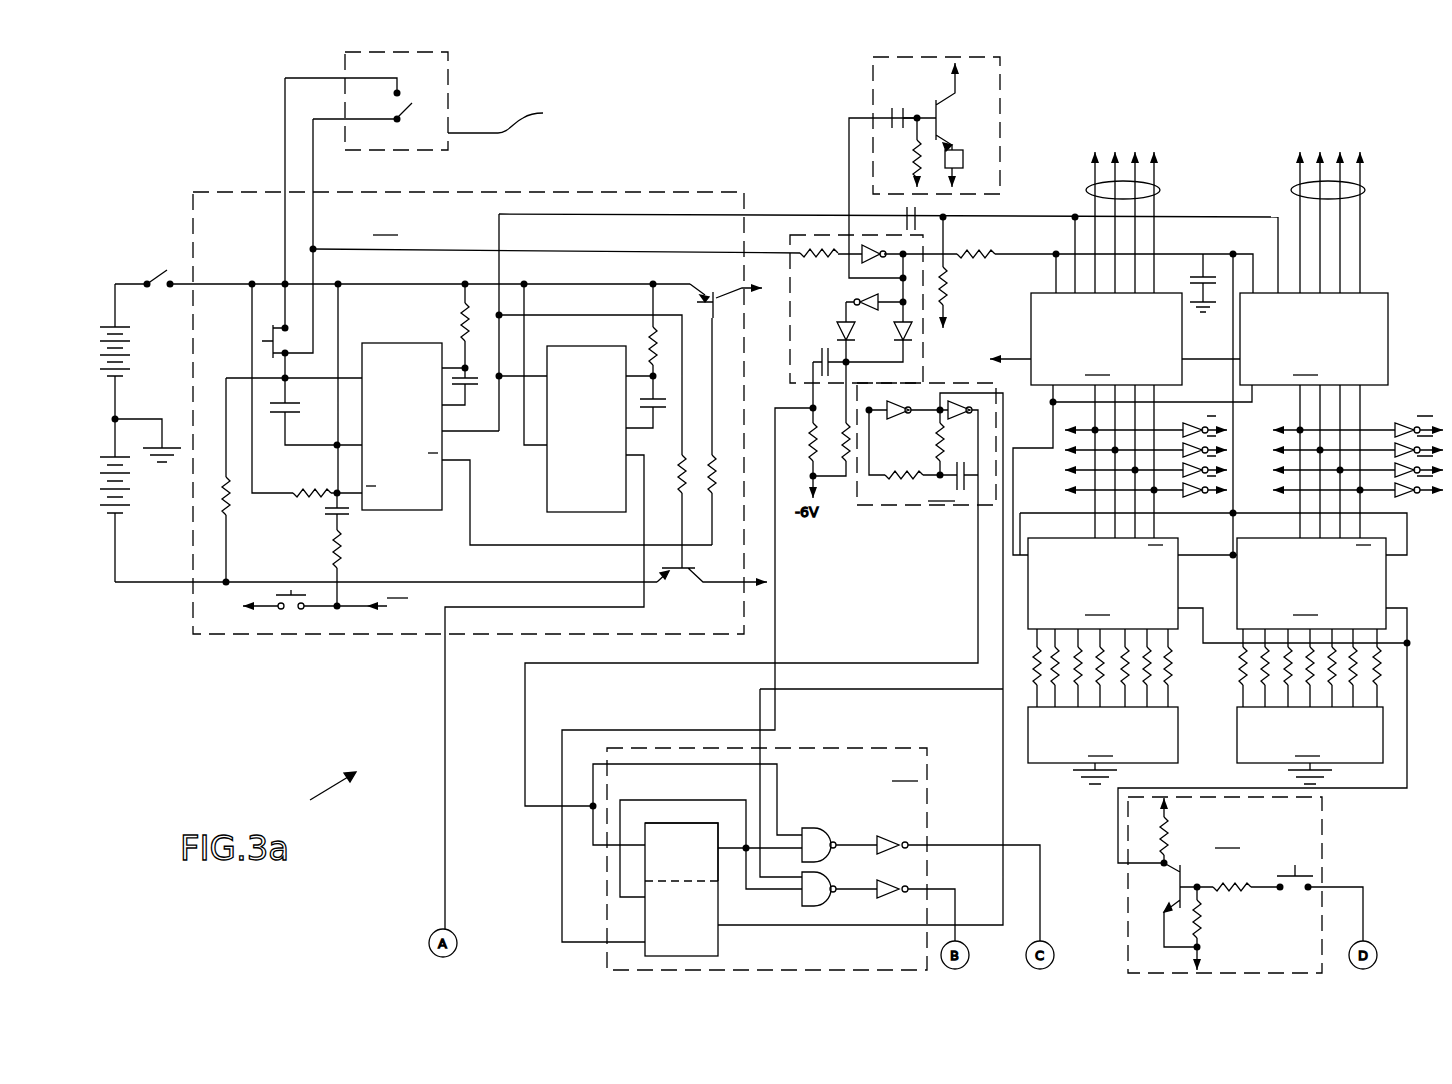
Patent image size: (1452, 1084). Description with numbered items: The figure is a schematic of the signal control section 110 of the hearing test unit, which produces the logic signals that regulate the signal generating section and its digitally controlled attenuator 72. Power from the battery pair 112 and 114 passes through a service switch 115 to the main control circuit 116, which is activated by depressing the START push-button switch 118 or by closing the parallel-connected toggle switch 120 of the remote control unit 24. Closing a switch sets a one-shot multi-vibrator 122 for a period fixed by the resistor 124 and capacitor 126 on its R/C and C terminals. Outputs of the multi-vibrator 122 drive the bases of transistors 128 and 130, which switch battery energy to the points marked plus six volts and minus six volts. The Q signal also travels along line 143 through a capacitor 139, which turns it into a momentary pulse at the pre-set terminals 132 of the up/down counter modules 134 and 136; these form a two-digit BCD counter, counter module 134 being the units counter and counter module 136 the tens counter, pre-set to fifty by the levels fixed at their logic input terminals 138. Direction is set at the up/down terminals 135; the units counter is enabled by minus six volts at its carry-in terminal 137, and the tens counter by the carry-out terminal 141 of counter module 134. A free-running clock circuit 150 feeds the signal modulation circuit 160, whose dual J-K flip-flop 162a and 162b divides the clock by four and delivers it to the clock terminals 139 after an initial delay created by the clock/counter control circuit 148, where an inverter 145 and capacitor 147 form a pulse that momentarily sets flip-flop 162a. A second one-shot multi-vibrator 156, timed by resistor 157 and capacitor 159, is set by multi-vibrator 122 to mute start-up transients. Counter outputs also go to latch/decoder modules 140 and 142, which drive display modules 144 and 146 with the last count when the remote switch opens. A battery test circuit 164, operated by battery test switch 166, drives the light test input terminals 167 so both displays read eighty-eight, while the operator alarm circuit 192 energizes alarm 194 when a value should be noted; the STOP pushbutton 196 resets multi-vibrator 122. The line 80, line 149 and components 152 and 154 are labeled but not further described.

The remote control unit 24 is at (519, 105).
The digitally controlled attenuator 72 is at (1123, 530).
The signal from U/D counter 136 80 is at (347, 673).
The signal control section 110 is at (243, 796).
The battery 112 is at (96, 355).
The battery 114 is at (96, 490).
The service switch 115 is at (156, 275).
The main control circuit 116 is at (468, 413).
The START push-button switch 118 is at (268, 334).
The toggle switch 120 is at (413, 100).
The one-shot multi-vibrator 122 is at (425, 511).
The resistor 124 is at (460, 328).
The capacitor 126 is at (469, 376).
The transistor 128 is at (719, 304).
The transistor 130 is at (685, 564).
The pre-set (P) input terminal 132 is at (1065, 294).
The up/down counter module 134 is at (1106, 339).
The up/down (U/D) terminal 135 is at (1030, 288).
The up/down counter module 136 is at (1314, 339).
The carry-in (CI) terminal 137 is at (1030, 354).
The logic input terminals 138 is at (1160, 186).
The clock (CK) input terminal 139 is at (918, 208).
The latch/decoder module 140 is at (1103, 583).
The carry-out (CO) terminal 141 is at (1182, 360).
The latch/decoder module 142 is at (1311, 583).
The line 143 is at (585, 214).
The display module 144 is at (1103, 706).
The inverter 145 is at (860, 300).
The display module 146 is at (1310, 706).
The capacitor 147 is at (828, 348).
The clock/counter control circuit 148 is at (800, 233).
The up/down line 149 is at (591, 252).
The clock circuit 150 is at (760, 594).
The resistor 152 is at (938, 450).
The capacitor 154 is at (962, 468).
The second one-shot multi-vibrator 156 is at (547, 475).
The resistor 157 is at (645, 358).
The capacitor 159 is at (655, 410).
The signal modulation circuit 160 is at (815, 859).
The J-K flip-flop 162a is at (718, 939).
The J-K flip-flop 162b is at (697, 825).
The battery test circuit 164 is at (1225, 885).
The battery test switch 166 is at (1313, 876).
The light test input terminal 167 is at (1178, 608).
The operator alarm circuit 192 is at (1000, 108).
The alarm 194 is at (963, 158).
The STOP pushbutton 196 is at (290, 595).